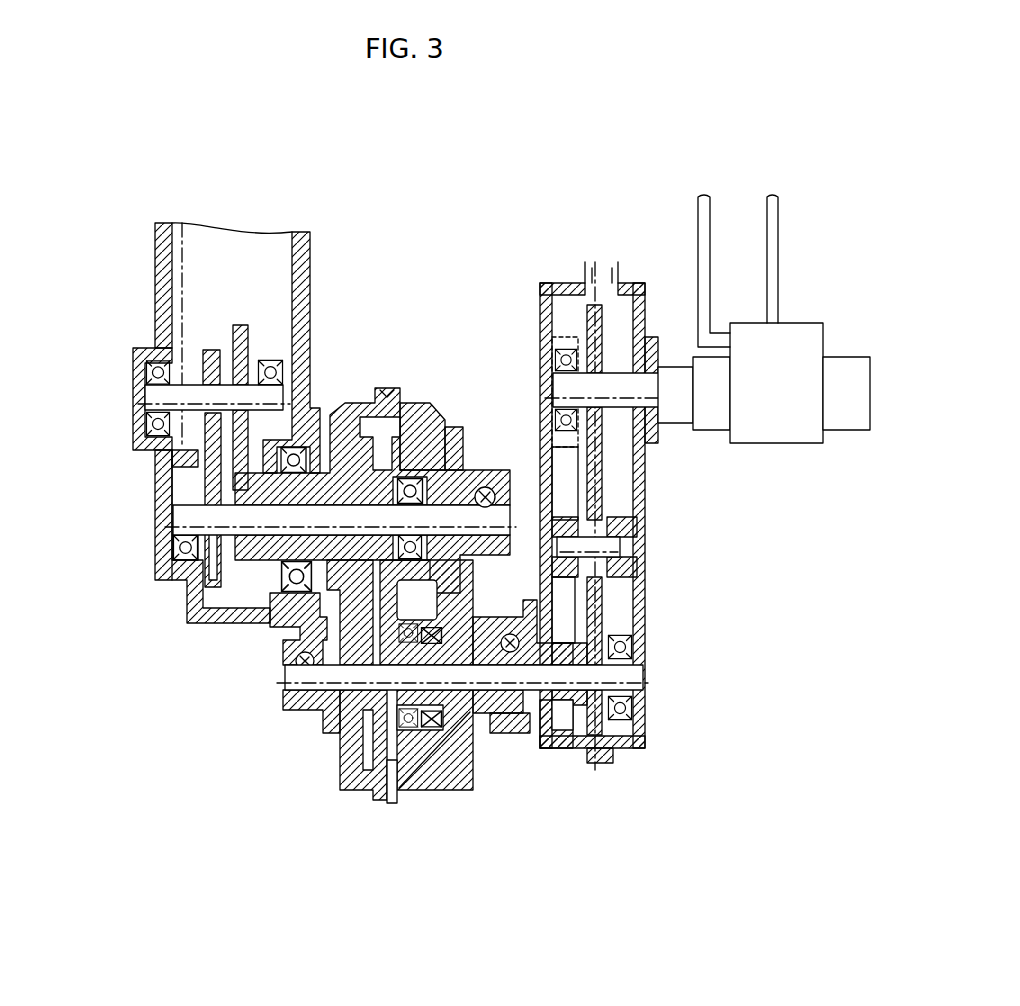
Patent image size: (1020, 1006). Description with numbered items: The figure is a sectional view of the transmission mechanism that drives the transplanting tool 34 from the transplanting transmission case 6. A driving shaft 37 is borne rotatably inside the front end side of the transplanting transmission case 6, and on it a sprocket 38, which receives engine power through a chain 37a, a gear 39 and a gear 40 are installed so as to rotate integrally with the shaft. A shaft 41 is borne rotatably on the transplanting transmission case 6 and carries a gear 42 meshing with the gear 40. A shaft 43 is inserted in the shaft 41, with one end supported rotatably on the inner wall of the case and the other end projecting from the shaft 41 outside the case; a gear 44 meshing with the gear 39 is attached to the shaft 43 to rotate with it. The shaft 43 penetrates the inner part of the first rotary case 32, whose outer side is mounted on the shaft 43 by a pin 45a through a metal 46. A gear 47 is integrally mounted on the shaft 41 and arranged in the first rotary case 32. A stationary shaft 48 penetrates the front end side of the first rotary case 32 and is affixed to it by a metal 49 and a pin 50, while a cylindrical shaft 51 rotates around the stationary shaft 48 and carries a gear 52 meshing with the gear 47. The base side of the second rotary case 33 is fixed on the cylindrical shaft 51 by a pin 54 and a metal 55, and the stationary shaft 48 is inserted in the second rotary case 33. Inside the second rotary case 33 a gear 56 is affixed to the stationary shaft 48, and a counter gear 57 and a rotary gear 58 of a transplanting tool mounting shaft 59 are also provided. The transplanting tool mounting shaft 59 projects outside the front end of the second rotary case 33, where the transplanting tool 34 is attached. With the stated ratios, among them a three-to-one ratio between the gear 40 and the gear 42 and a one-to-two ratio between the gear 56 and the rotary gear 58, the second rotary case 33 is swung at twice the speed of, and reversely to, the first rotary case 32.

The transplanting transmission case 6 is at (313, 243).
The chain 37a is at (142, 259).
The driving shaft 37 is at (131, 402).
The sprocket 38 is at (158, 341).
The gear 39 is at (203, 356).
The gear 40 is at (313, 287).
The shaft 41 is at (350, 487).
The gear 42 is at (240, 563).
The shaft 43 is at (183, 521).
The gear 44 is at (190, 578).
The pin 45a is at (484, 490).
The metal 46 is at (463, 425).
The gear 47 is at (417, 420).
The stationary shaft 48 is at (337, 747).
The metal 49 is at (313, 713).
The pin 50 is at (282, 680).
The cylindrical shaft 51 is at (478, 707).
The gear 52 is at (395, 780).
The first rotary case 32 is at (428, 787).
The pin 54 is at (510, 707).
The metal 55 is at (510, 640).
The gear 56 is at (608, 730).
The second rotary case 33 is at (655, 675).
The counter gear 57 is at (648, 488).
The rotary gear 58 is at (578, 322).
The transplanting tool mounting shaft 59 is at (620, 380).
The transplanting tool 34 is at (813, 265).